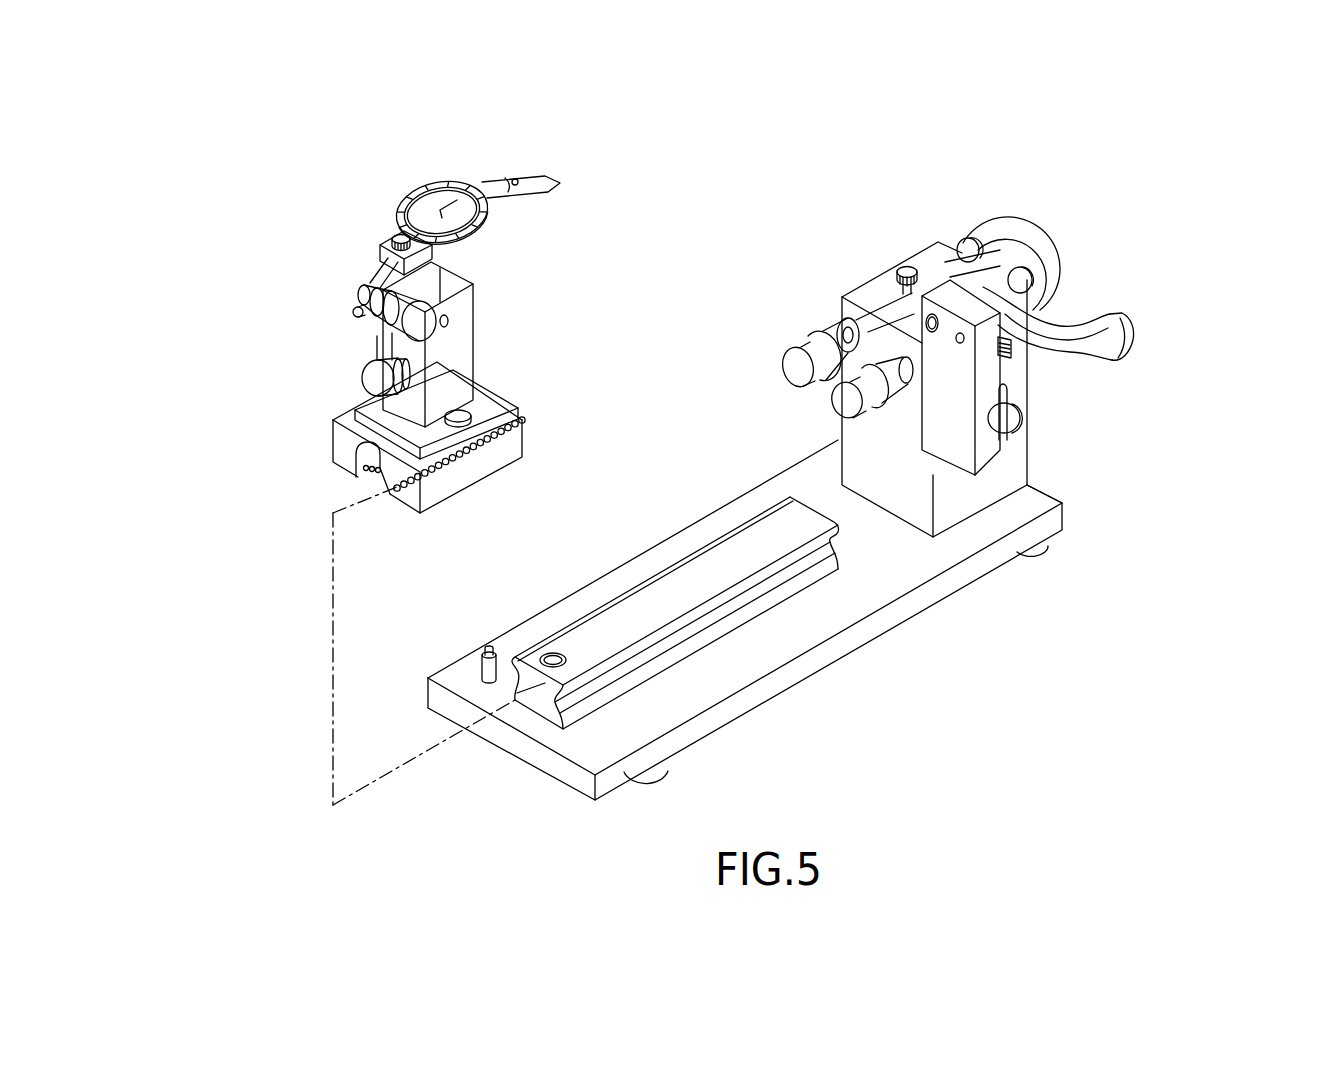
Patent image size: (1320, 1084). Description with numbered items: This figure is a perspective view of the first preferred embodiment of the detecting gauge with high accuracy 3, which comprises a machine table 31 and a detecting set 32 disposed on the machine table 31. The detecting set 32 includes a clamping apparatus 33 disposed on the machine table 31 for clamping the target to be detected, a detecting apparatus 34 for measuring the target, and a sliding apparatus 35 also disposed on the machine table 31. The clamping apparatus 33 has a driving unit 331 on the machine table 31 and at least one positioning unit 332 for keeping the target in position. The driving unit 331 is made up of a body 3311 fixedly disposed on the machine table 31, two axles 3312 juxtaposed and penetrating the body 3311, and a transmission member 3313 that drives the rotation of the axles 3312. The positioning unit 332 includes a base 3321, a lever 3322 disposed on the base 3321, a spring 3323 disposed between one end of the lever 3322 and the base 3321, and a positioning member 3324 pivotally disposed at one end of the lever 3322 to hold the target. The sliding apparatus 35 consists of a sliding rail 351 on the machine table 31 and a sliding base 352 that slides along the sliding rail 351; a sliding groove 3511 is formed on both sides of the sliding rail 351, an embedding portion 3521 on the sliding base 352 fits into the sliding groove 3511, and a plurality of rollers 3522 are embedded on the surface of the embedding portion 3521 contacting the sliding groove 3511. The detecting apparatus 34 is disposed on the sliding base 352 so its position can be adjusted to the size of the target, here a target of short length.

The detecting gauge with high accuracy 3 is at (176, 283).
The machine table 31 is at (853, 590).
The detecting set 32 is at (338, 225).
The clamping apparatus 33 is at (957, 218).
The detecting apparatus 34 is at (440, 212).
The sliding apparatus 35 is at (343, 400).
The sliding rail 351 is at (760, 537).
The sliding groove 3511 is at (598, 690).
The sliding base 352 is at (338, 437).
The embedding portion 3521 is at (365, 460).
The rollers 3522 is at (470, 470).
The driving unit 331 is at (1005, 216).
The body 3311 is at (935, 255).
The axles 3312 is at (810, 350).
The transmission member 3313 is at (1037, 252).
The positioning member 3324 is at (862, 318).
The positioning unit 332 is at (1145, 320).
The base 3321 is at (1027, 437).
The lever 3322 is at (1062, 330).
The spring 3323 is at (1004, 349).